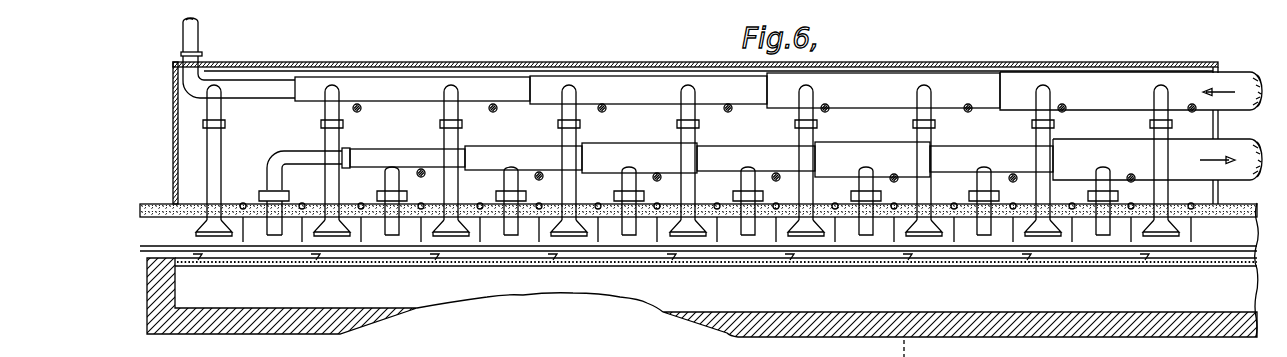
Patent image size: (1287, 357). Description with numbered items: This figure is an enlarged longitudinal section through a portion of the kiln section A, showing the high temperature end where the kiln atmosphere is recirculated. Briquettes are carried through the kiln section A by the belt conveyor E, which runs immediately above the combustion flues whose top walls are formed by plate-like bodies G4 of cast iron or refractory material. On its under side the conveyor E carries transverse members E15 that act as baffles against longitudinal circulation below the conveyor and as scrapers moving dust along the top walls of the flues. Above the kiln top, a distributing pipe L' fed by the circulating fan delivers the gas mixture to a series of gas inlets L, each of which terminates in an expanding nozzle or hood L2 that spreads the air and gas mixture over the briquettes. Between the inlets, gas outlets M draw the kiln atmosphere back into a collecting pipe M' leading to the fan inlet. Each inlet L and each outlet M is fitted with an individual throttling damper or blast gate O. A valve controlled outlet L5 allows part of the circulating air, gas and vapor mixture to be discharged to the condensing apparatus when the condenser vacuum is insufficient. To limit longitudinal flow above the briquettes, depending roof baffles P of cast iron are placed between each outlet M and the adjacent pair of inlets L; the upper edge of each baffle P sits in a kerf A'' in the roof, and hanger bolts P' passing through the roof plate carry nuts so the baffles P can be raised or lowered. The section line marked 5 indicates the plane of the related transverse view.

The valve controlled outlet L5 is at (197, 31).
The distributing pipe L' is at (731, 92).
The gas inlet L is at (764, 164).
The collecting pipe M' is at (872, 159).
The expanding nozzle L2 is at (558, 236).
The throttling damper O is at (320, 123).
The gas outlet M is at (688, 233).
The hanger bolt P' is at (422, 185).
The kerf A'' is at (698, 177).
The roof baffle P is at (712, 250).
The belt conveyor E is at (1245, 258).
The transverse member E15 is at (677, 257).
The plate-like body G4 is at (1122, 267).
The kiln section A is at (713, 270).
The section line 5 is at (903, 58).